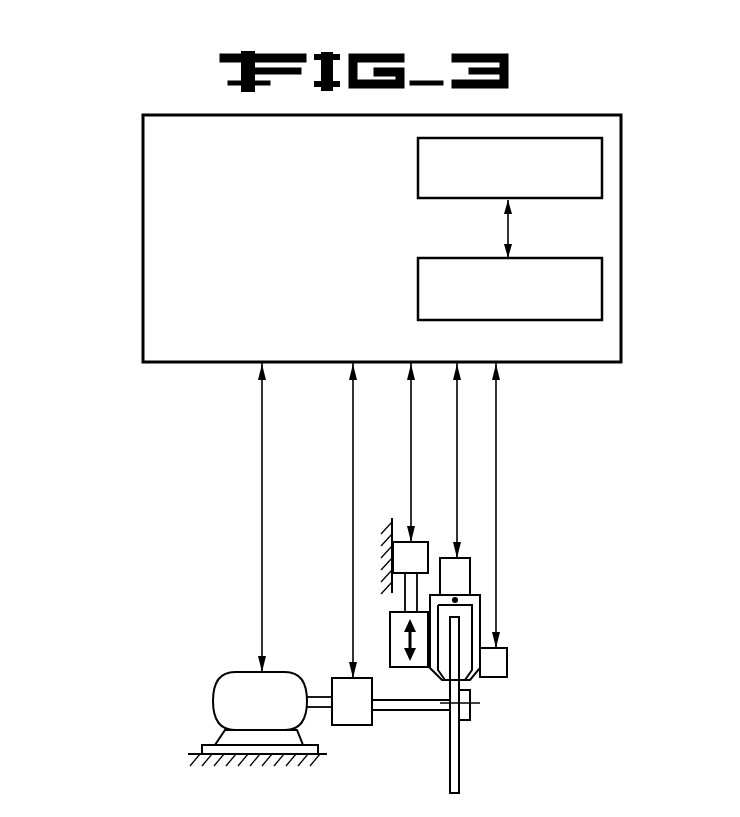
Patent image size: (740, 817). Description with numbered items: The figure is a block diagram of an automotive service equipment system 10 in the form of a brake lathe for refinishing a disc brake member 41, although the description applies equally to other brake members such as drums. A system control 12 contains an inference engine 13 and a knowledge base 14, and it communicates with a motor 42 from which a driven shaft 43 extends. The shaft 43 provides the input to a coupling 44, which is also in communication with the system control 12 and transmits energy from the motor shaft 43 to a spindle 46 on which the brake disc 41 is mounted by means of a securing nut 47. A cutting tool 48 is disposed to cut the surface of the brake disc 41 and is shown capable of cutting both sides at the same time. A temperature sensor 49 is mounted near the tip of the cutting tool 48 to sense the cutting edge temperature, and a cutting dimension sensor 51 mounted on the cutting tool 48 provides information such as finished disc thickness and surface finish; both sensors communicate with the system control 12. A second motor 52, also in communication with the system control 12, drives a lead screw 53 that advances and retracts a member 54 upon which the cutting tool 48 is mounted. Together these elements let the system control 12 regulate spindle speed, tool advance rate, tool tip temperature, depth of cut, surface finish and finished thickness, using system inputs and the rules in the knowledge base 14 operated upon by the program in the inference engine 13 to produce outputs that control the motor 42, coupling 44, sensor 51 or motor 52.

The automotive service equipment system 10 is at (131, 86).
The system control 12 is at (568, 114).
The inference engine 13 is at (602, 172).
The knowledge base 14 is at (602, 296).
The disc brake member 41 is at (460, 740).
The motor 42 is at (222, 705).
The driven shaft 43 is at (312, 696).
The coupling 44 is at (358, 726).
The spindle 46 is at (385, 710).
The securing nut 47 is at (472, 715).
The cutting tool 48 is at (480, 608).
The temperature sensor 49 is at (507, 662).
The cutting dimension sensor 51 is at (470, 578).
The motor 52 is at (428, 543).
The lead screw 53 is at (405, 603).
The member 54 is at (402, 667).